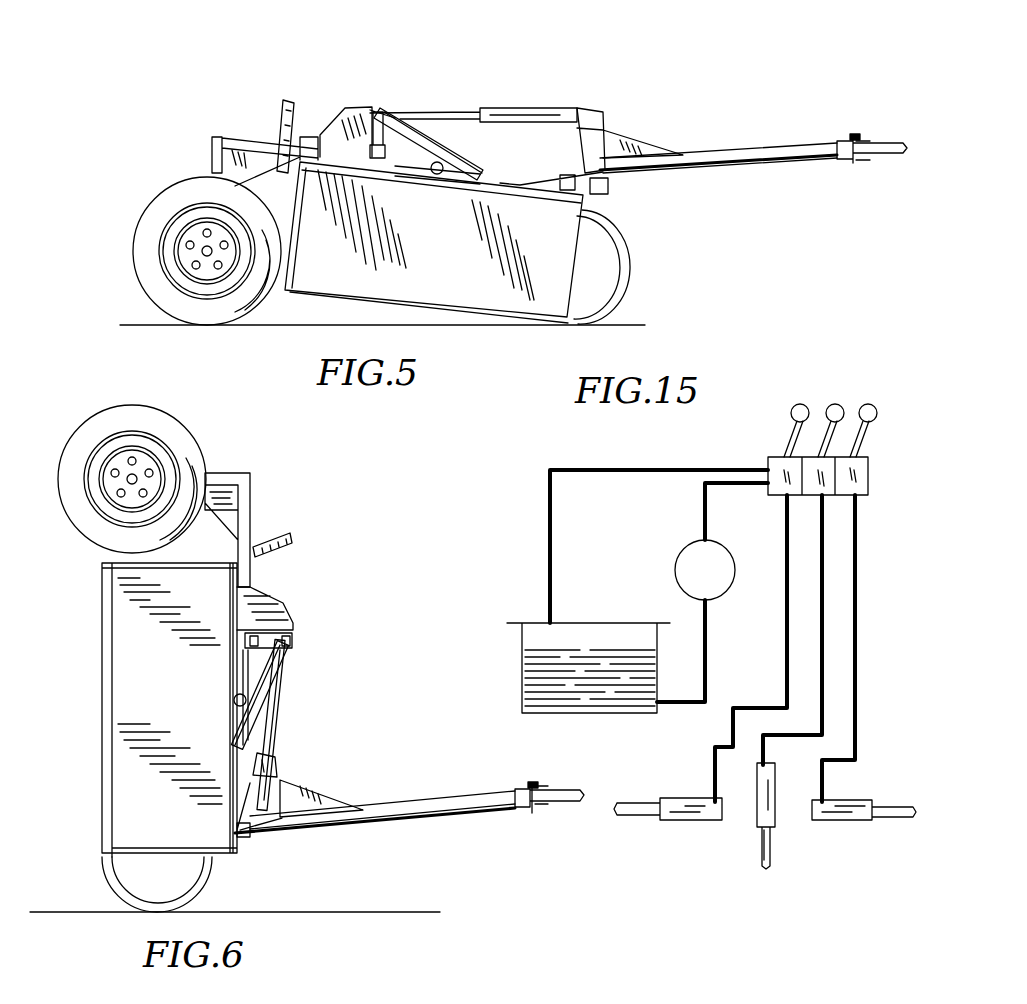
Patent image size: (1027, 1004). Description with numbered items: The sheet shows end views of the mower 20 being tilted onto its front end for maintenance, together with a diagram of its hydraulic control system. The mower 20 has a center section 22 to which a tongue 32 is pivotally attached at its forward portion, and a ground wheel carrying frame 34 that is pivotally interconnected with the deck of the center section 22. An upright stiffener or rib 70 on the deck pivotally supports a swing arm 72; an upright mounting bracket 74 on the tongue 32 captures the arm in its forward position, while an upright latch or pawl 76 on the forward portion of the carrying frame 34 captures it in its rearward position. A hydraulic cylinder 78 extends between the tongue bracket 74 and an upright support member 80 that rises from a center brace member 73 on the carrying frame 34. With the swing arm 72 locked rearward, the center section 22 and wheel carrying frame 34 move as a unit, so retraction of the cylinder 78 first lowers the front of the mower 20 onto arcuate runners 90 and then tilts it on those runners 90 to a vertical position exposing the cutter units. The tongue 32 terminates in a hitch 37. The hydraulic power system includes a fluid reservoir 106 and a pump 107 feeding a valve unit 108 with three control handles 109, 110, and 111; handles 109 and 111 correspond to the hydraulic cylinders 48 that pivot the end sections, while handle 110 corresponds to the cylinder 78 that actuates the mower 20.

In FIG. 5, the mower 20 is at (234, 86).
In FIG. 6, the mower 20 is at (110, 383).
In FIG. 5, the center section 22 is at (580, 252).
In FIG. 6, the center section 22 is at (147, 631).
In FIG. 5, the tongue 32 is at (780, 157).
In FIG. 6, the tongue 32 is at (450, 800).
In FIG. 5, the ground wheel carrying frame 34 is at (207, 139).
In FIG. 6, the ground wheel carrying frame 34 is at (256, 476).
In FIG. 5, the hitch coupler 37 is at (878, 157).
In FIG. 6, the hitch coupler 37 is at (548, 802).
In FIG. 15, the hydraulic cylinders 48 is at (702, 817).
In FIG. 5, the upright stiffener or rib 70 is at (517, 177).
In FIG. 6, the upright stiffener or rib 70 is at (240, 772).
In FIG. 5, the swing arm 72 is at (416, 138).
In FIG. 6, the swing arm 72 is at (268, 678).
In FIG. 5, the center brace member 73 is at (390, 150).
In FIG. 6, the center brace member 73 is at (252, 665).
In FIG. 5, the upright mounting bracket 74 is at (592, 110).
In FIG. 6, the upright mounting bracket 74 is at (277, 772).
In FIG. 5, the upright latch or pawl 76 is at (380, 117).
In FIG. 6, the upright latch or pawl 76 is at (290, 642).
In FIG. 5, the hydraulic cylinder 78 is at (503, 113).
In FIG. 6, the hydraulic cylinder 78 is at (273, 723).
In FIG. 15, the hydraulic cylinder 78 is at (762, 808).
In FIG. 5, the upright support member 80 is at (339, 127).
In FIG. 6, the upright support member 80 is at (266, 598).
In FIG. 5, the rocker members or arcuate runners 90 is at (632, 287).
In FIG. 6, the rocker members or arcuate runners 90 is at (213, 883).
In FIG. 15, the fluid reservoir 106 is at (625, 620).
In FIG. 15, the pump 107 is at (687, 543).
In FIG. 15, the valve unit 108 is at (767, 457).
In FIG. 15, the valve control handle 109 is at (798, 407).
In FIG. 15, the valve control handle 110 is at (837, 404).
In FIG. 15, the valve control handle 111 is at (869, 404).